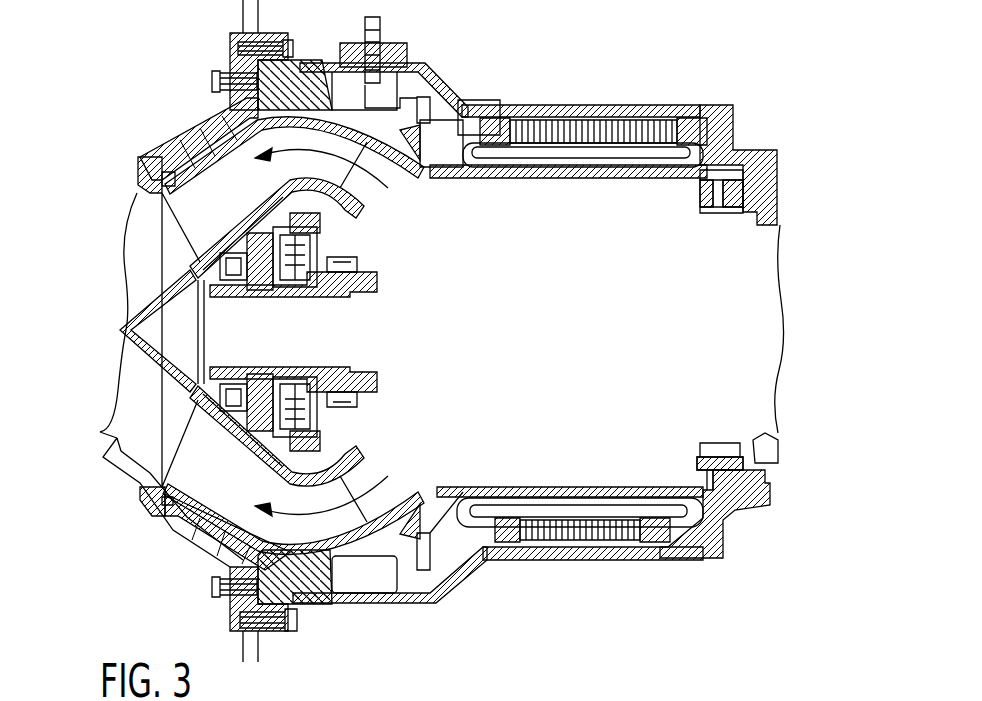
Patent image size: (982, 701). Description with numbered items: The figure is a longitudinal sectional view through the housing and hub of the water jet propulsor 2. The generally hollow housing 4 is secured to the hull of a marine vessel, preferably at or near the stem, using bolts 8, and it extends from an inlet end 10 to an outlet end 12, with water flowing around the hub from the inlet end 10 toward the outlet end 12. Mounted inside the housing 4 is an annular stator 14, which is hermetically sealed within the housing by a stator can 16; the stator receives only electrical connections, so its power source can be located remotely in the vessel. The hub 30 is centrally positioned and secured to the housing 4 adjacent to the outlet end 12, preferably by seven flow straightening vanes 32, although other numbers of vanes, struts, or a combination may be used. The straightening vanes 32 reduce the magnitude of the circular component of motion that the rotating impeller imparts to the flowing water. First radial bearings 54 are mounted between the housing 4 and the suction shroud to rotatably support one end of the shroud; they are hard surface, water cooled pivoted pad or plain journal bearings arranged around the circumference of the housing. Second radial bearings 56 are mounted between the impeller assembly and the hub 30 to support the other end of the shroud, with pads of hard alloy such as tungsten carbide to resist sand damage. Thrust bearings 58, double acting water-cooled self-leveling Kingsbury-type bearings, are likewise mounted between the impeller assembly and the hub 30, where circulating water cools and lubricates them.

The water jet propulsor 2 is at (621, 104).
The housing 4 is at (740, 133).
The bolts 8 is at (291, 50).
The inlet end 10 is at (781, 425).
The outlet end 12 is at (117, 438).
The annular stator 14 is at (557, 123).
The stator can 16 is at (600, 173).
The hub 30 is at (123, 330).
The flow straightening vanes 32 is at (350, 200).
The first radial bearings 54 is at (713, 213).
The second radial bearings 56 is at (340, 375).
The thrust bearings 58 is at (260, 380).